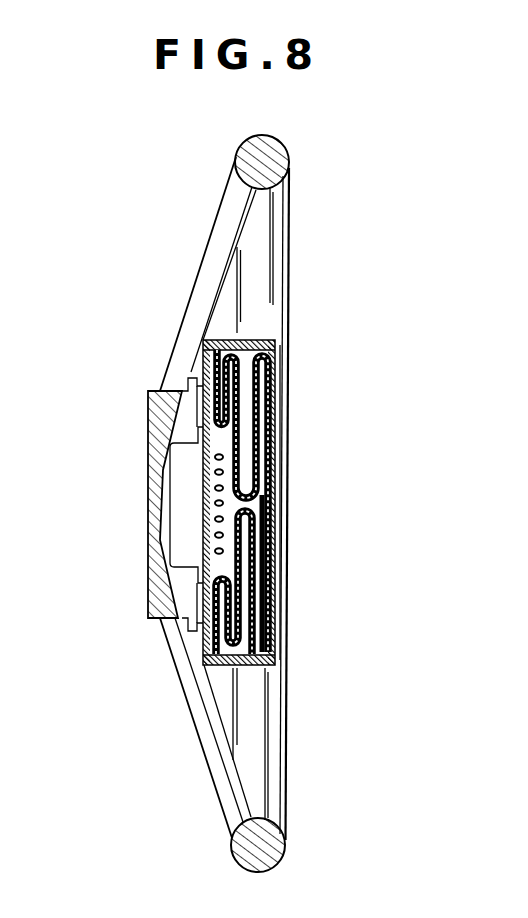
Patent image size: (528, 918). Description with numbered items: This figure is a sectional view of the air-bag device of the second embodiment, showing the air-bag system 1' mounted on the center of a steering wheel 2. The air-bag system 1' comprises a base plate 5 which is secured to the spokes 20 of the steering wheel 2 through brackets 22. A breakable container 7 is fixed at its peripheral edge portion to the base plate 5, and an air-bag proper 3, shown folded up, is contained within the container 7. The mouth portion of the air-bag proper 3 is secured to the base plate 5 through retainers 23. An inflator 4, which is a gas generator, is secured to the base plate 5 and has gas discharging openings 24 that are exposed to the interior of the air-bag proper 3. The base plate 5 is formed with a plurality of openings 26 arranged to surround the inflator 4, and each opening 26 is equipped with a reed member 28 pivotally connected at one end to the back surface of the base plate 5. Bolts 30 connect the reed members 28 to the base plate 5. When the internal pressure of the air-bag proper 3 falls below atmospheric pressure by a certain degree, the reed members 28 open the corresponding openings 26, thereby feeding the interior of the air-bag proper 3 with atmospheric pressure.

The steering wheel 2 is at (291, 218).
The spokes 20 is at (205, 272).
The brackets 22 is at (197, 365).
The openings 26 is at (200, 403).
The inflator 4 is at (178, 550).
The base plate 5 is at (200, 588).
The breakable container 7 is at (283, 413).
The retainers 23 is at (285, 318).
The air-bag proper 3 is at (283, 448).
The reed member 28 is at (285, 390).
The bolts 30 is at (285, 358).
The gas discharging openings 24 is at (222, 522).
The air-bag system 1' is at (430, 472).